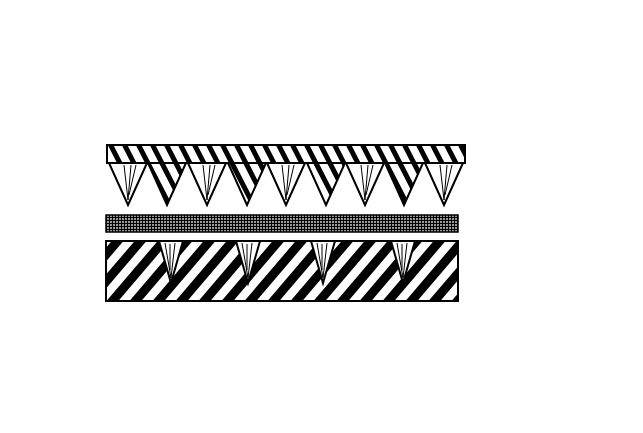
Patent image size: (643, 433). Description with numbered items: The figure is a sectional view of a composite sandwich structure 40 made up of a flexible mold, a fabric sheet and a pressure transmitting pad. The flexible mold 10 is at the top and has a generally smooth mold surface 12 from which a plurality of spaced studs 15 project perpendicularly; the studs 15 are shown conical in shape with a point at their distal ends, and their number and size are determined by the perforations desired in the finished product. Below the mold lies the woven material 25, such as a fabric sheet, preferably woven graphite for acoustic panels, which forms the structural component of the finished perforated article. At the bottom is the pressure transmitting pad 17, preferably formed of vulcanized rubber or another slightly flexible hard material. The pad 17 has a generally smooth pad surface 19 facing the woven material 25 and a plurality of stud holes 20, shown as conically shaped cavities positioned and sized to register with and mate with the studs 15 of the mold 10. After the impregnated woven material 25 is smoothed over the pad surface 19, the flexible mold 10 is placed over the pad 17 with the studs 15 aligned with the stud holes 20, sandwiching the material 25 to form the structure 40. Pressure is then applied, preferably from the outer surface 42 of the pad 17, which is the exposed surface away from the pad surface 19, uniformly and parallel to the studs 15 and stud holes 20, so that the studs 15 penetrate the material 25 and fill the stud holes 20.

The composite sandwich structure 40 is at (489, 92).
The flexible mold 10 is at (290, 145).
The mold surface 12 is at (127, 206).
The studs 15 is at (467, 185).
The woven material 25 is at (460, 216).
The pad surface 19 is at (427, 239).
The stud holes 20 is at (422, 258).
The pressure transmitting pad 17 is at (106, 270).
The outer surface 42 is at (222, 302).